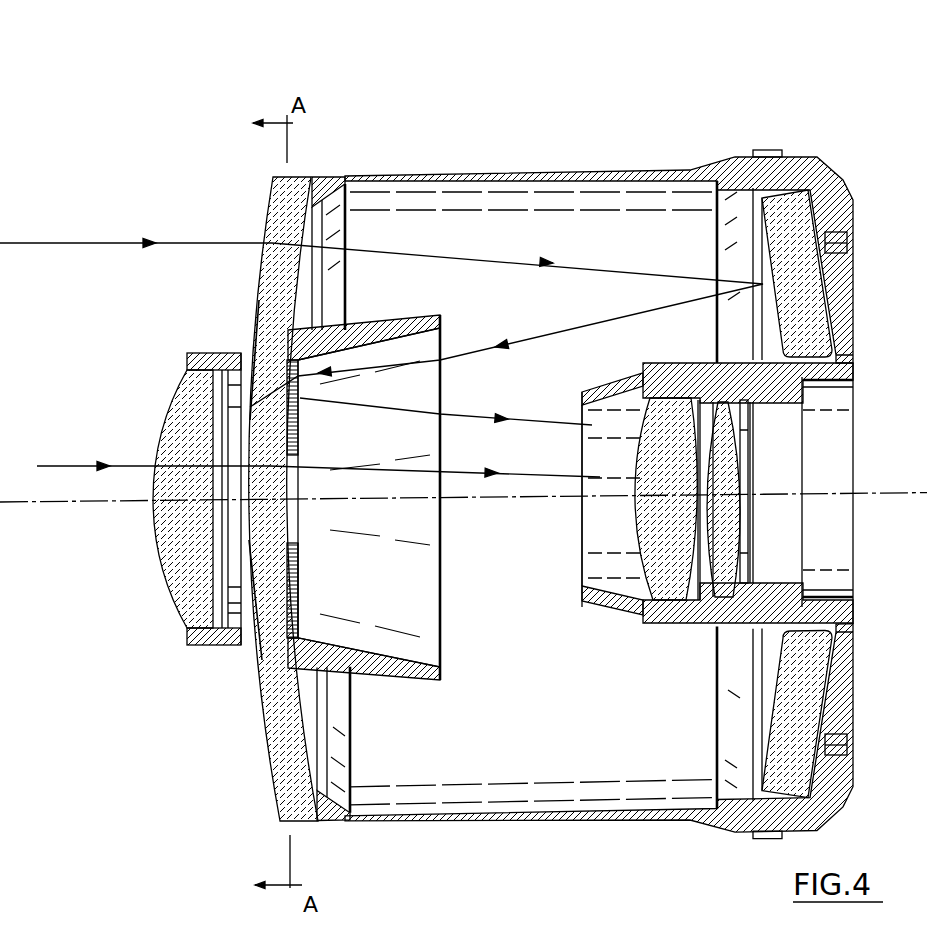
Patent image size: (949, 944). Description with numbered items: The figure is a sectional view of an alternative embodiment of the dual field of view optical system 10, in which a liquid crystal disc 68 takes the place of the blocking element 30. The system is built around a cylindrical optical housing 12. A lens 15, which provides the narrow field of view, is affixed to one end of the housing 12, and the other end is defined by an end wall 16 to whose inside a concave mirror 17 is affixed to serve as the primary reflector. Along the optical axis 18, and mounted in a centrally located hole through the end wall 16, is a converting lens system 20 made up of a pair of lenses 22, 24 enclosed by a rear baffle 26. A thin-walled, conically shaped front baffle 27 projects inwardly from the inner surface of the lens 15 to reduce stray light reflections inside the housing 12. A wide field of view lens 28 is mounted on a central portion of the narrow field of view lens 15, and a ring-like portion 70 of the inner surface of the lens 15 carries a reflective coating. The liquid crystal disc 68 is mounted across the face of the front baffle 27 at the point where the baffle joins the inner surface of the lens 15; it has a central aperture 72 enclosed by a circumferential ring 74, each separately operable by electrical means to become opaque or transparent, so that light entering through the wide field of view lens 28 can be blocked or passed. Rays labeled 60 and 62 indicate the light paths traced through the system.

The dual field of view optical system 10 is at (630, 448).
The optical housing 12 is at (392, 175).
The lens 15 is at (270, 224).
The end wall 16 is at (852, 320).
The concave mirror 17 is at (847, 262).
The optical axis 18 is at (116, 503).
The converting lens system 20 is at (621, 624).
The lens 22 is at (680, 603).
The lens 24 is at (720, 603).
The rear baffle 26 is at (594, 602).
The front baffle 27 is at (434, 688).
The wide field of view lens 28 is at (167, 597).
The blocking element 30 is at (355, 638).
The light ray 60 is at (97, 243).
The light ray 62 is at (75, 466).
The liquid crystal disc 68 is at (306, 582).
The ring-like portion 70 is at (286, 394).
The central aperture 72 is at (286, 548).
The circumferential ring 74 is at (250, 300).